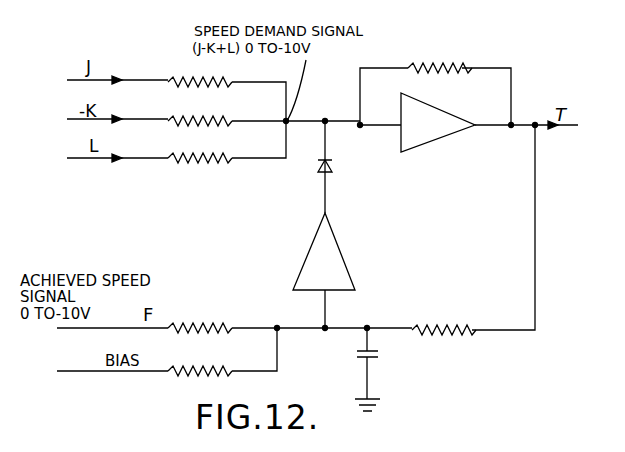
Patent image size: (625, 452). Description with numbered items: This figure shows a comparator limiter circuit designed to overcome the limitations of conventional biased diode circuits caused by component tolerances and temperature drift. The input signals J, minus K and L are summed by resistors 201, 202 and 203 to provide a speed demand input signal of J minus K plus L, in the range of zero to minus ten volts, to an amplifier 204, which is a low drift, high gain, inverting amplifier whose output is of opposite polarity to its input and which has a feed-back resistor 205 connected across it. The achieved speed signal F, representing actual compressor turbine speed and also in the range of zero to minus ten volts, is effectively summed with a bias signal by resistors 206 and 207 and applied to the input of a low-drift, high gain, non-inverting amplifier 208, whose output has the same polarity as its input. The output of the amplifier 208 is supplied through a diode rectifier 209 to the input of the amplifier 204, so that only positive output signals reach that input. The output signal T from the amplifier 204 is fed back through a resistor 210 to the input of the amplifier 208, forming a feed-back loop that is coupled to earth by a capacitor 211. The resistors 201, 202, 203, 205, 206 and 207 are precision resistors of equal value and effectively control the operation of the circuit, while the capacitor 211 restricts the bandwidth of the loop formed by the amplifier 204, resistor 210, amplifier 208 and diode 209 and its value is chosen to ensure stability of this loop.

The resistor 201 is at (173, 80).
The resistor 202 is at (175, 118).
The resistor 203 is at (175, 156).
The amplifier 204 is at (436, 135).
The feed-back resistor 205 is at (453, 66).
The resistor 206 is at (224, 324).
The resistor 207 is at (213, 372).
The amplifier 208 is at (338, 283).
The diode rectifier 209 is at (333, 171).
The resistor 210 is at (449, 324).
The capacitor 211 is at (378, 356).